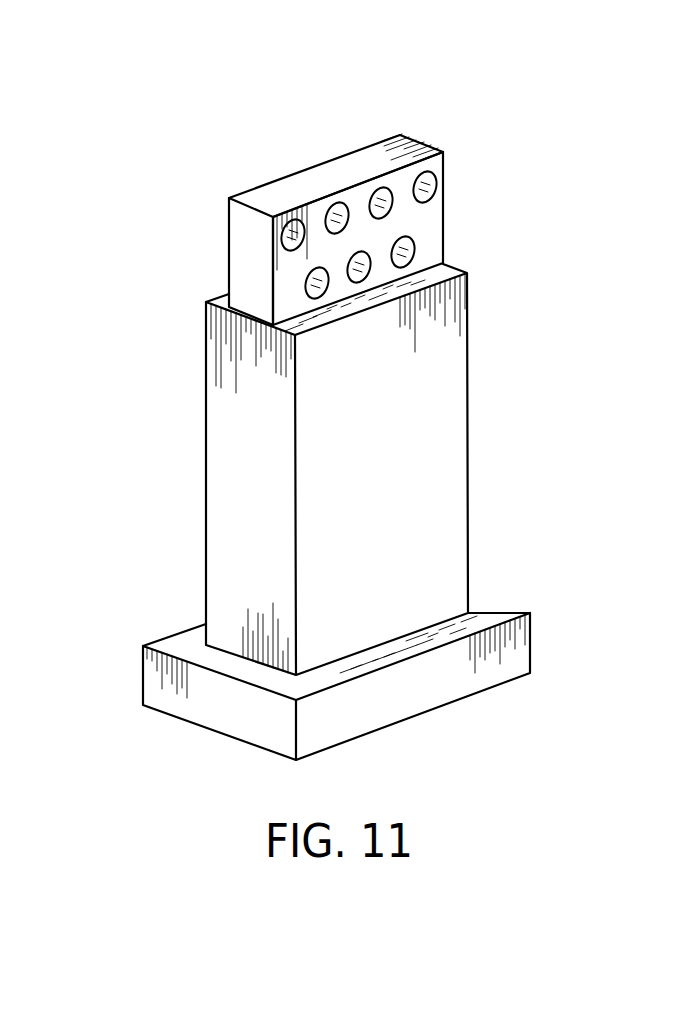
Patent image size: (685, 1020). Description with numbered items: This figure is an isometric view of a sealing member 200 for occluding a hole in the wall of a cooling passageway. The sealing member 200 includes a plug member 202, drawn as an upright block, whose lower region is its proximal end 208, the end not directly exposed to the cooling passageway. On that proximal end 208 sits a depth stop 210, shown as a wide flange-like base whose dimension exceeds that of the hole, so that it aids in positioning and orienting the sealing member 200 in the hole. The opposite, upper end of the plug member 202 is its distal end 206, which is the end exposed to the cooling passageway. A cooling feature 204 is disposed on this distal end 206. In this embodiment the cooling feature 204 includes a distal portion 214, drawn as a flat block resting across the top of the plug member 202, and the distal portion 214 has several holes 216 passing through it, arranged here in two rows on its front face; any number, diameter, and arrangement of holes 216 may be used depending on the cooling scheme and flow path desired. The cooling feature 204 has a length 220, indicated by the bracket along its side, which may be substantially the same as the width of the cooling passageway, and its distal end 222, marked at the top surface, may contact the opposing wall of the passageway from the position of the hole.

The sealing member 200 is at (522, 452).
The plug member 202 is at (417, 490).
The cooling feature 204 is at (402, 123).
The distal end 206 is at (478, 283).
The proximal end 208 is at (495, 583).
The depth stop 210 is at (180, 645).
The distal portion 214 is at (257, 267).
The hole 216 is at (295, 233).
The length 220 is at (448, 264).
The distal end of cooling feature 222 is at (303, 172).